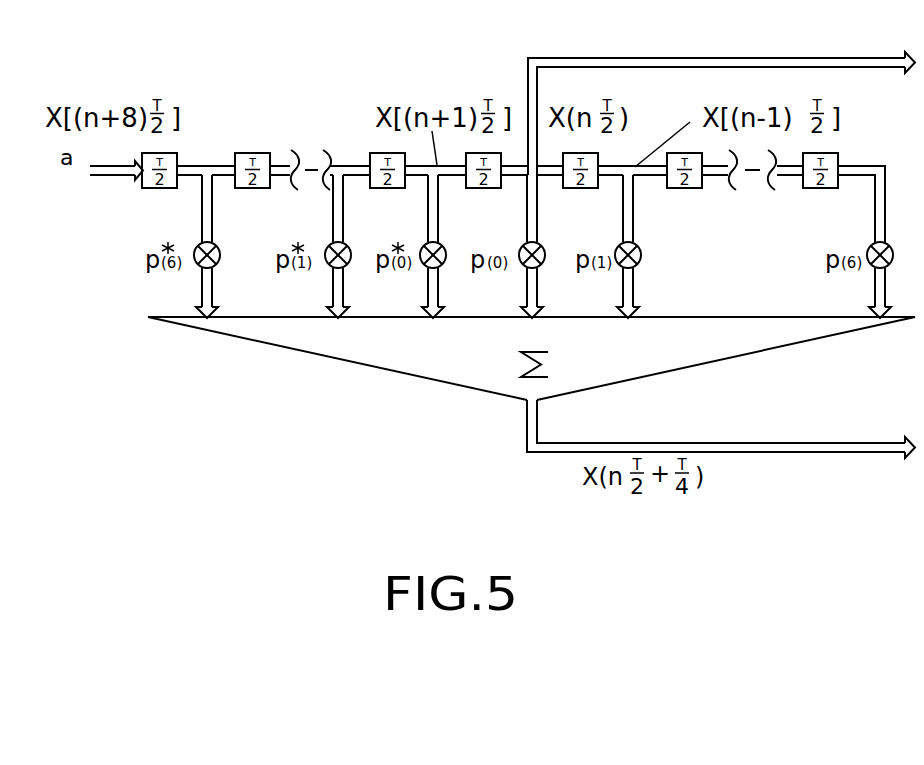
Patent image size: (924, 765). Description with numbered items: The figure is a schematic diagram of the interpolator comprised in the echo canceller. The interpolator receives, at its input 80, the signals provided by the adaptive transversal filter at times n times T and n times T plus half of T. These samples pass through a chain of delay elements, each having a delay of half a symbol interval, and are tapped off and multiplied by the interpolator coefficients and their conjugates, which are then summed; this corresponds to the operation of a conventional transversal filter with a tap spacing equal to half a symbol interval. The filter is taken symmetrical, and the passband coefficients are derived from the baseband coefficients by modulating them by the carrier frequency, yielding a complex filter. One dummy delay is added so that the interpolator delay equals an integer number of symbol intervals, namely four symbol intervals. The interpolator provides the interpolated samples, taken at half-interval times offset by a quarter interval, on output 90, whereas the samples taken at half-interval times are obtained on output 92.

The input line for digital samples a_n 80 is at (126, 176).
The output 90 is at (735, 455).
The output 92 is at (660, 57).